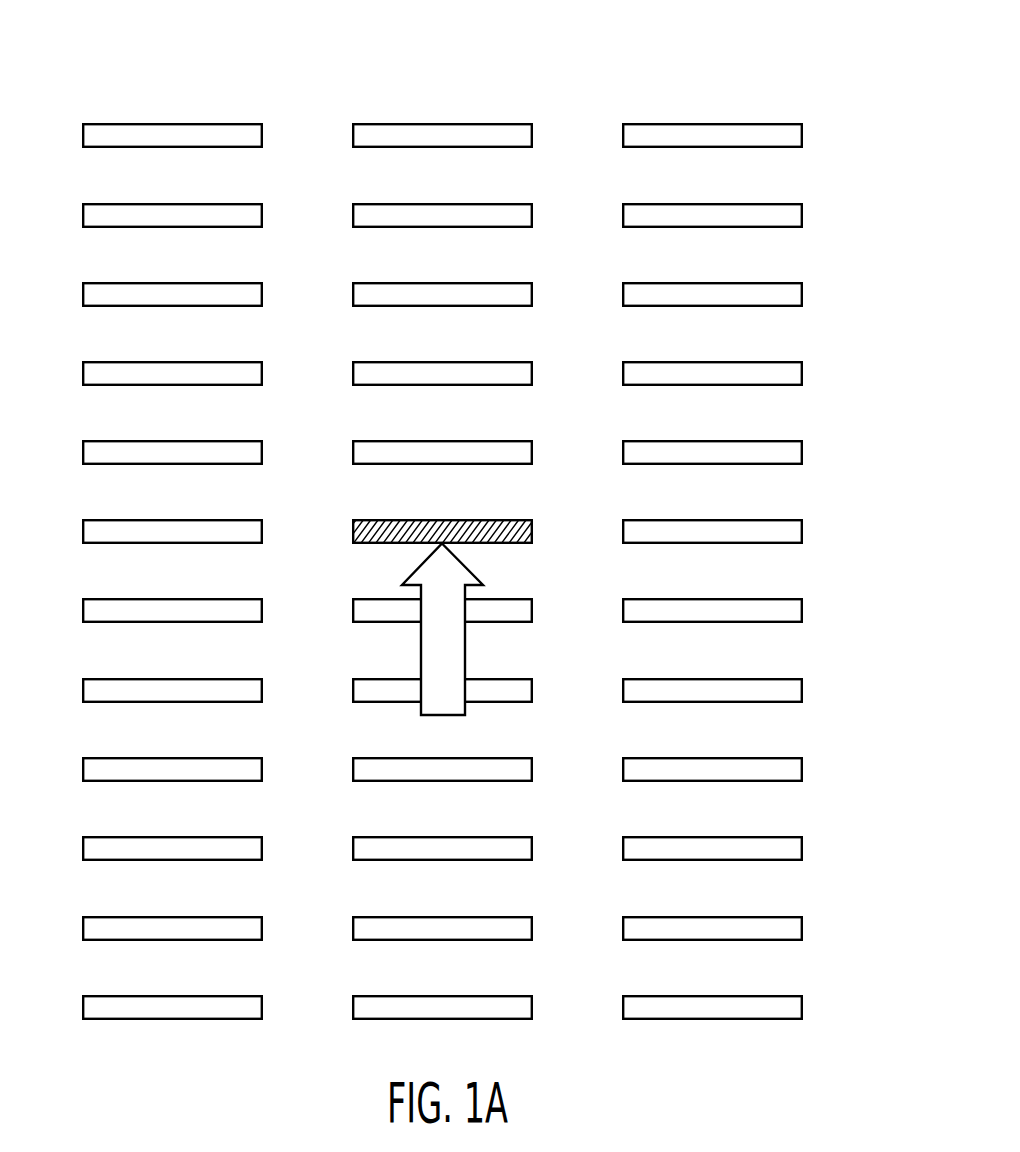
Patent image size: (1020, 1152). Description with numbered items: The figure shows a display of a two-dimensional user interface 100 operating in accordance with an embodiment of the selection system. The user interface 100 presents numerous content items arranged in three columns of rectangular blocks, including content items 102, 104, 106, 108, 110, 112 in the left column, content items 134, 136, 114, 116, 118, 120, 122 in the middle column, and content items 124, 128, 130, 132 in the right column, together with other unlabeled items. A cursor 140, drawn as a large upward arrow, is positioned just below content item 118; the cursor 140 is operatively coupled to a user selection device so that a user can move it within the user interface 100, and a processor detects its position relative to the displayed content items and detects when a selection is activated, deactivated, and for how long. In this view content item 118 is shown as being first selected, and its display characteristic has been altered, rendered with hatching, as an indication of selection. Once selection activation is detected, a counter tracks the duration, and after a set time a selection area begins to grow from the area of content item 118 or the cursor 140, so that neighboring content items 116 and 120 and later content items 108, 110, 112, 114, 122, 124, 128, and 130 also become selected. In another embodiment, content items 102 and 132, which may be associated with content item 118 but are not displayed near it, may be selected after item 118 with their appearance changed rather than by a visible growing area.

The user interface 100 is at (713, 56).
The content item 102 is at (102, 130).
The content item 104 is at (98, 208).
The content item 106 is at (98, 287).
The content item 108 is at (93, 450).
The content item 110 is at (82, 530).
The content item 112 is at (82, 609).
The content item 114 is at (371, 369).
The content item 116 is at (369, 441).
The content item 118 is at (361, 528).
The content item 120 is at (360, 604).
The content item 122 is at (362, 691).
The content item 124 is at (630, 450).
The content item 128 is at (630, 528).
The content item 130 is at (630, 607).
The content item 132 is at (630, 687).
The content item 134 is at (390, 130).
The content item 136 is at (363, 209).
The cursor 140 is at (432, 715).